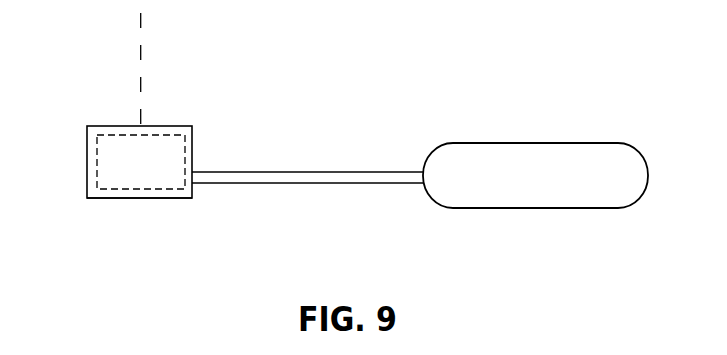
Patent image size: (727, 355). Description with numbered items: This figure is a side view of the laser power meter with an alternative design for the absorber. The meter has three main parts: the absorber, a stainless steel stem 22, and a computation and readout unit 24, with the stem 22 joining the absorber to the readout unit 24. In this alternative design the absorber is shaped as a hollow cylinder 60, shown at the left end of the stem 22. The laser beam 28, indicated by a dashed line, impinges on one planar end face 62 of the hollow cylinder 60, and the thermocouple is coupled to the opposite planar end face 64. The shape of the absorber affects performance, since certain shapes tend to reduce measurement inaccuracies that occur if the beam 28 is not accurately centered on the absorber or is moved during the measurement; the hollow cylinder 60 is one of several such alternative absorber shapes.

The stainless steel stem 22 is at (325, 170).
The computation and readout unit 24 is at (548, 143).
The laser beam 28 is at (142, 53).
The hollow cylinder 60 is at (87, 154).
The planar end face 62 is at (155, 126).
The opposite planar end face 64 is at (145, 199).